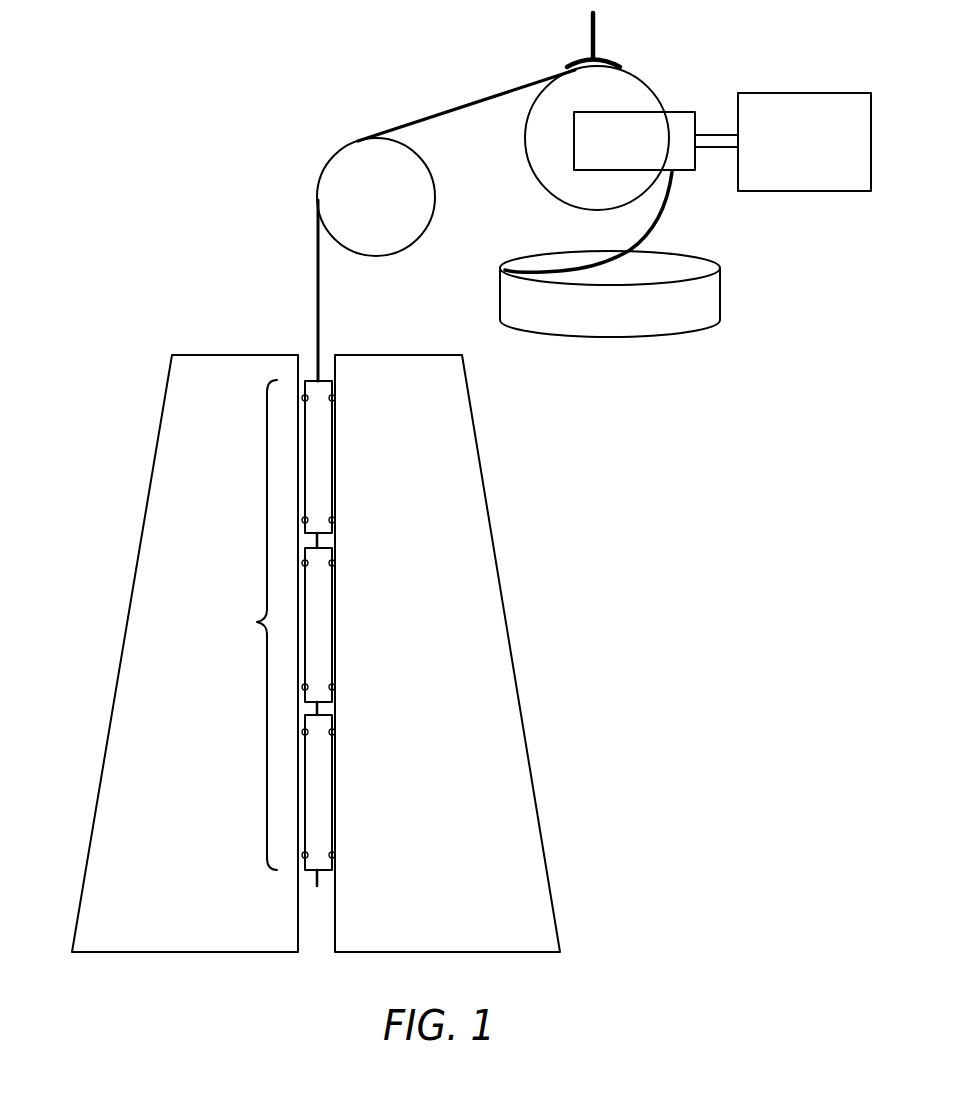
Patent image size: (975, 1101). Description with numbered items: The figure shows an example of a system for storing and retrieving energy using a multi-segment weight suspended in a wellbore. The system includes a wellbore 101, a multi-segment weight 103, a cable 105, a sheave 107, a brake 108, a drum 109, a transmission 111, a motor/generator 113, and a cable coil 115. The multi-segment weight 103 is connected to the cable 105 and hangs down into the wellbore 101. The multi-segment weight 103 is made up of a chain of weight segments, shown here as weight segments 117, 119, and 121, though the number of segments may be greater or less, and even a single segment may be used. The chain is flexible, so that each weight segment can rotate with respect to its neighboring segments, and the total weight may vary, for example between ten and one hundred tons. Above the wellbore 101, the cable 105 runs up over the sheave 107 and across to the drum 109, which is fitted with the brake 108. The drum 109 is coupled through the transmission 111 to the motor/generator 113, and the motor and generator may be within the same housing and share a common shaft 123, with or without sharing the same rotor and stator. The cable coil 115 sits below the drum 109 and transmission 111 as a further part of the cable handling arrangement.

The wellbore 101 is at (310, 334).
The multi-segment weight 103 is at (244, 625).
The cable 105 is at (320, 296).
The sheave 107 is at (433, 217).
The brake 108 is at (590, 36).
The drum 109 is at (524, 147).
The transmission 111 is at (668, 171).
The motor/generator 113 is at (800, 93).
The cable coil 115 is at (720, 300).
The weight segment 117 is at (330, 462).
The weight segment 119 is at (330, 625).
The weight segment 121 is at (330, 790).
The common shaft 123 is at (722, 135).